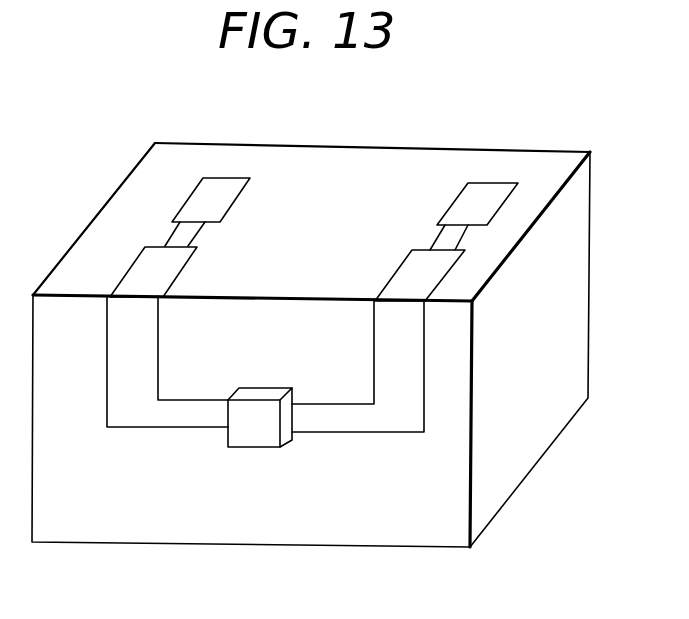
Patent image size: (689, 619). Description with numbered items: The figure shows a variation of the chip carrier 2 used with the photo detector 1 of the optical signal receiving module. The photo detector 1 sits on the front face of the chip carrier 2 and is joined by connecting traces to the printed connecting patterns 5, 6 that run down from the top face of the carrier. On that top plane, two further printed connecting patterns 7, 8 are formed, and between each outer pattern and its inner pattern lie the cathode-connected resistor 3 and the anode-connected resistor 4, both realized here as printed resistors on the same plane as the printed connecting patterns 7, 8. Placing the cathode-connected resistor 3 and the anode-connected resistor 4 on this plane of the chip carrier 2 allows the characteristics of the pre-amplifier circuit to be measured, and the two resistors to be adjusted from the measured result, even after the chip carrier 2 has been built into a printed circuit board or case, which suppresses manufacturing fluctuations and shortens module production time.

The photo detector 1 is at (255, 425).
The chip carrier 2 is at (372, 170).
The cathode-connected resistor 3 is at (450, 241).
The anode-connected resistor 4 is at (185, 240).
The printed connecting pattern 5 is at (425, 268).
The printed connecting pattern 6 is at (162, 264).
The printed connecting pattern 7 is at (475, 204).
The printed connecting pattern 8 is at (210, 200).